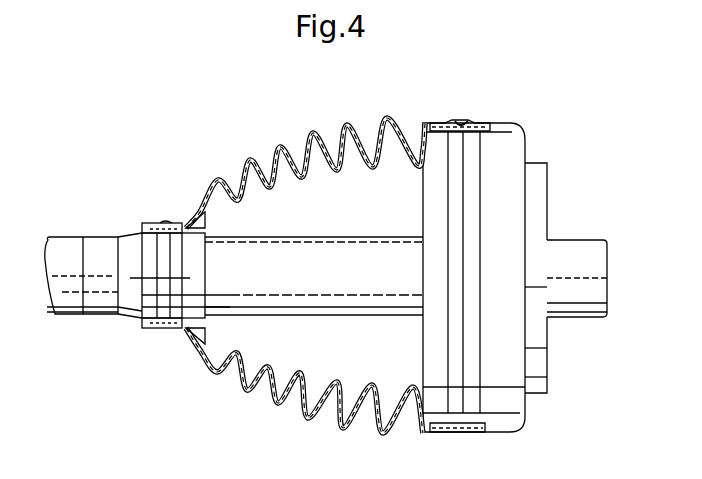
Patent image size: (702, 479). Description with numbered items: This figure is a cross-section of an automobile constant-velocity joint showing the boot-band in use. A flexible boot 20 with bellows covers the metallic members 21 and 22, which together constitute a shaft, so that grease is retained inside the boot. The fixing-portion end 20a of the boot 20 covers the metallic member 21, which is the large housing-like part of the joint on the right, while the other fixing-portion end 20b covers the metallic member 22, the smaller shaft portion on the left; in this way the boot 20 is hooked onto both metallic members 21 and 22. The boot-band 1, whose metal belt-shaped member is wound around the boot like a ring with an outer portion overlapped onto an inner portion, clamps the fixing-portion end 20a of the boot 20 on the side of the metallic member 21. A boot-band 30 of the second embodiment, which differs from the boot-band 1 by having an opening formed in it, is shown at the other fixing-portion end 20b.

The boot-band 1 is at (509, 252).
The boot 20 is at (305, 145).
The fixing-portion end 20a is at (458, 125).
The other fixing-portion end 20b is at (155, 202).
The metallic member 21 is at (505, 197).
The metallic member 22 is at (163, 303).
The boot-band 30 is at (173, 226).